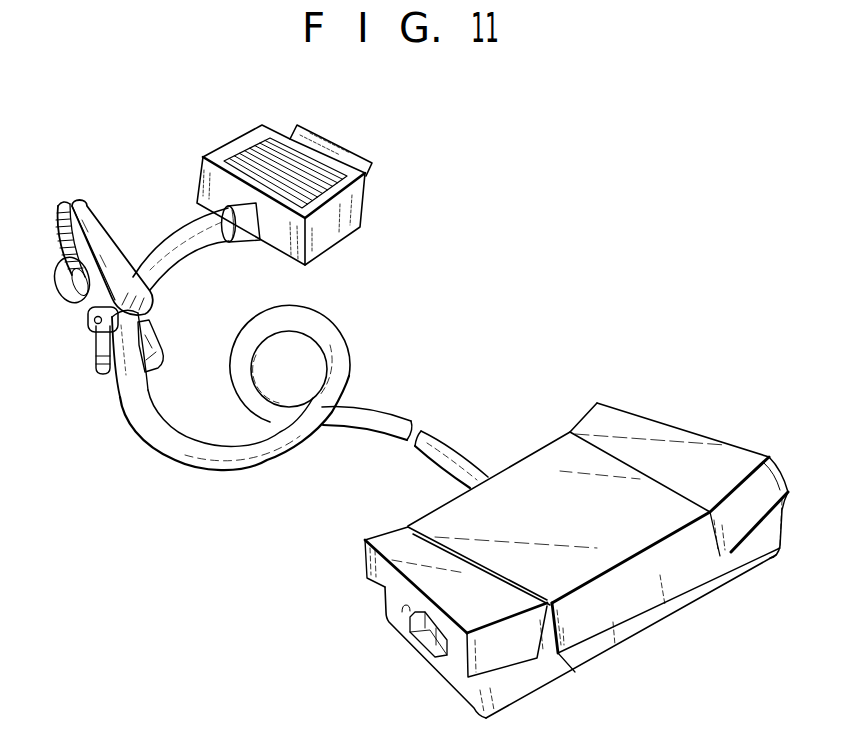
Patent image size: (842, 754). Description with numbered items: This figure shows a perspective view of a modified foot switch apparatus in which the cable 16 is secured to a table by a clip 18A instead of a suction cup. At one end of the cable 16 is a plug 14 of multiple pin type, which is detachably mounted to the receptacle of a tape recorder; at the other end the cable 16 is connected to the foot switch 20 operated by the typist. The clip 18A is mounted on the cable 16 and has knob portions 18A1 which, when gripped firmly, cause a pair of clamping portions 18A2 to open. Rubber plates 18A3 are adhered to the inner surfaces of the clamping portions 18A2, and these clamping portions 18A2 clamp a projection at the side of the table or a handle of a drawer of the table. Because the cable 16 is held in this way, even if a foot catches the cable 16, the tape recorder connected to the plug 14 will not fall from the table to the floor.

The plug 14 is at (337, 235).
The cable 16 is at (253, 461).
The clip 18A is at (107, 298).
The knob portions 18A1 is at (127, 384).
The clamping portions 18A2 is at (98, 228).
The rubber plates 18A3 is at (65, 205).
The foot switch 20 is at (638, 621).